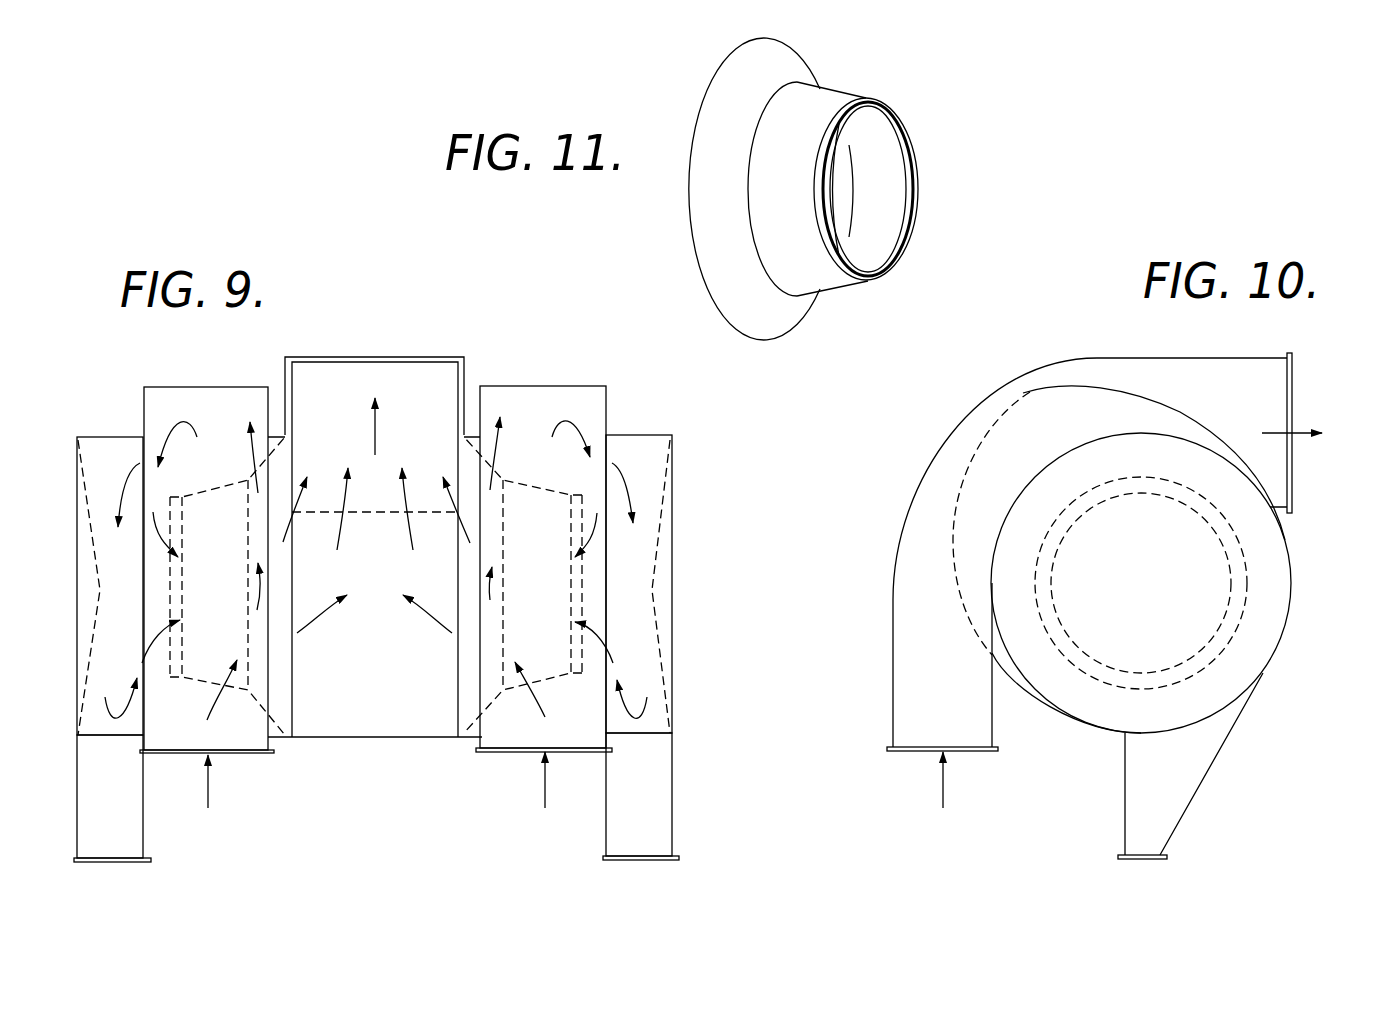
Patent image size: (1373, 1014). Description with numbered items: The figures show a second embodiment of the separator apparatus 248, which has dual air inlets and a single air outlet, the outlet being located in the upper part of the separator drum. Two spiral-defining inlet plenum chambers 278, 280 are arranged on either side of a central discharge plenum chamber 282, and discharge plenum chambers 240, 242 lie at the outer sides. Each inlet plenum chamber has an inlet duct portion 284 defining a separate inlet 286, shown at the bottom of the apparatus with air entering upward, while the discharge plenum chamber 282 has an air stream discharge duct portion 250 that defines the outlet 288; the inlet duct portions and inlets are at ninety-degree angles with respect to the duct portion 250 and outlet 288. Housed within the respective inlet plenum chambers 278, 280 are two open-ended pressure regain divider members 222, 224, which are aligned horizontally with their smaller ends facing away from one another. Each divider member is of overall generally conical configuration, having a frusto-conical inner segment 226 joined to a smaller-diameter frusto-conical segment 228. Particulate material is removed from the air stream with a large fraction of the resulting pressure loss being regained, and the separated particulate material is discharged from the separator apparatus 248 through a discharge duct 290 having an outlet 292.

In FIG. 9, the pressure regain divider member 222 is at (218, 480).
In FIG. 11, the pressure regain divider member 222 is at (855, 90).
In FIG. 9, the pressure regain divider member 224 is at (520, 477).
In FIG. 11, the frusto-conical inner segment 226 is at (718, 105).
In FIG. 11, the frusto-conical segment 228 is at (823, 278).
In FIG. 9, the discharge plenum chamber 240 is at (117, 430).
In FIG. 9, the discharge plenum chamber 242 is at (665, 432).
In FIG. 9, the separator apparatus 248 is at (420, 327).
In FIG. 10, the separator apparatus 248 is at (970, 398).
In FIG. 9, the air stream discharge duct portion 250 is at (374, 406).
In FIG. 10, the air stream discharge duct portion 250 is at (1237, 358).
In FIG. 9, the inlet plenum chamber 278 is at (240, 385).
In FIG. 9, the inlet plenum chamber 280 is at (590, 383).
In FIG. 10, the inlet plenum chamber 280 is at (895, 537).
In FIG. 9, the discharge plenum chamber 282 is at (378, 742).
In FIG. 10, the discharge plenum chamber 282 is at (1100, 360).
In FIG. 9, the inlet duct portion 284 is at (292, 687).
In FIG. 10, the inlet duct portion 284 is at (910, 708).
In FIG. 9, the inlet 286 is at (243, 755).
In FIG. 10, the inlet 286 is at (970, 752).
In FIG. 10, the outlet 288 is at (1292, 400).
In FIG. 9, the discharge duct 290 is at (83, 787).
In FIG. 10, the discharge duct 290 is at (1205, 775).
In FIG. 9, the outlet 292 is at (130, 862).
In FIG. 10, the outlet 292 is at (1130, 860).